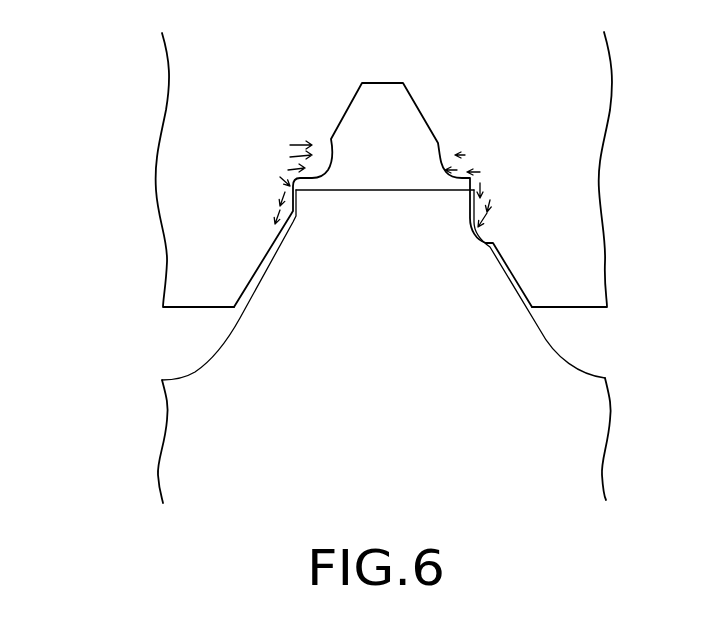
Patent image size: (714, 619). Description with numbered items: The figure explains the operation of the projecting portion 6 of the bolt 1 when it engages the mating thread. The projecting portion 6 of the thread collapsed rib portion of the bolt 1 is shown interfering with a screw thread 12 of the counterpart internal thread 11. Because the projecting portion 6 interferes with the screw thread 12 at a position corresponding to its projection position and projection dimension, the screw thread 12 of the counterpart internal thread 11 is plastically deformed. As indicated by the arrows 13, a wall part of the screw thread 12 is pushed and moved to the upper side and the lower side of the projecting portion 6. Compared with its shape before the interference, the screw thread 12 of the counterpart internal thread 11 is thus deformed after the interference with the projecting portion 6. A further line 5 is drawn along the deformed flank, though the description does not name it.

The bolt 1 is at (145, 448).
The coating film / clearance surface 5 is at (502, 335).
The projecting portion 6 is at (382, 215).
The counterpart internal thread 11 is at (145, 95).
The screw thread 12 is at (185, 270).
The arrows 13 is at (285, 182).